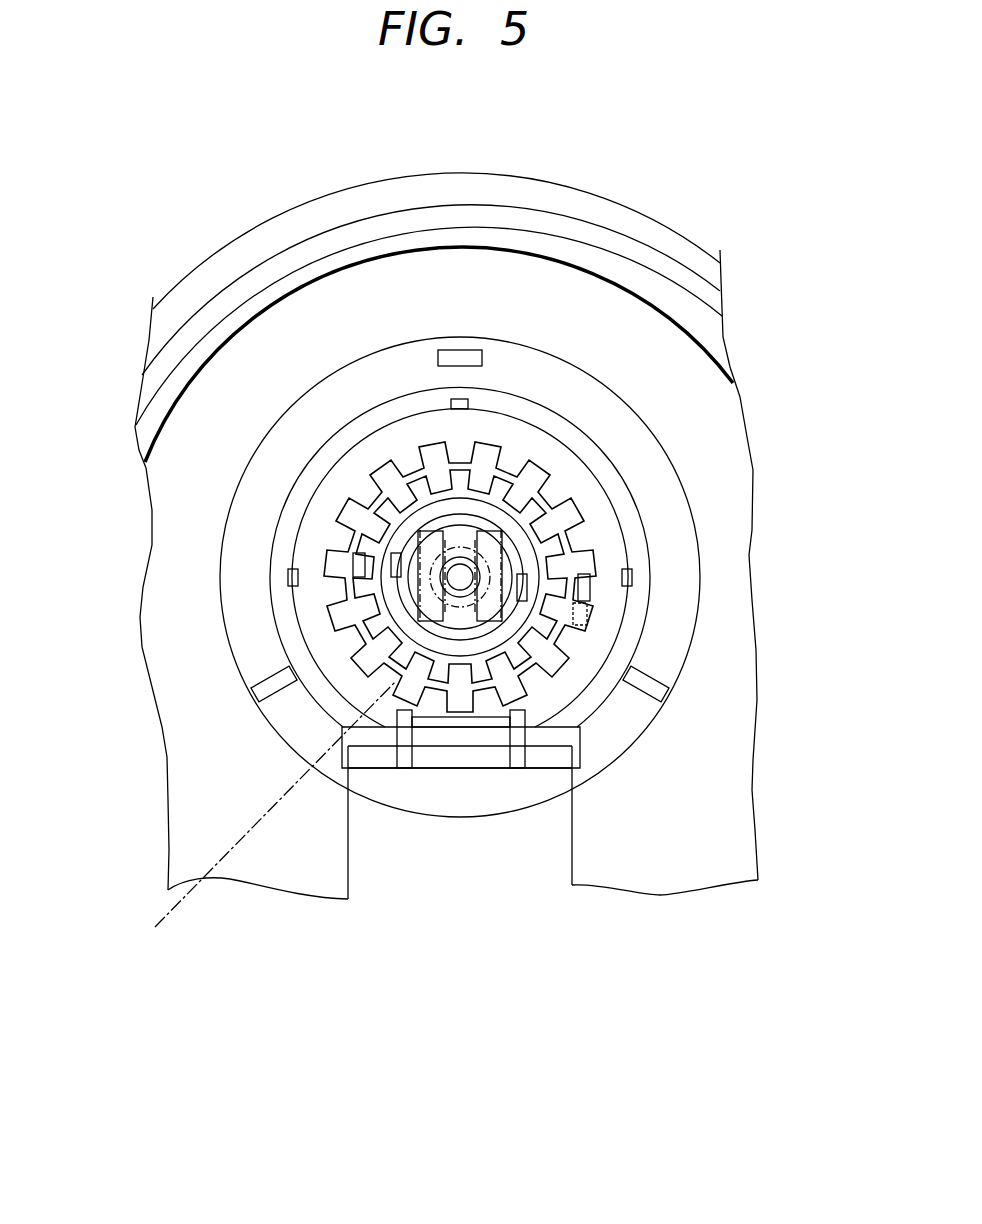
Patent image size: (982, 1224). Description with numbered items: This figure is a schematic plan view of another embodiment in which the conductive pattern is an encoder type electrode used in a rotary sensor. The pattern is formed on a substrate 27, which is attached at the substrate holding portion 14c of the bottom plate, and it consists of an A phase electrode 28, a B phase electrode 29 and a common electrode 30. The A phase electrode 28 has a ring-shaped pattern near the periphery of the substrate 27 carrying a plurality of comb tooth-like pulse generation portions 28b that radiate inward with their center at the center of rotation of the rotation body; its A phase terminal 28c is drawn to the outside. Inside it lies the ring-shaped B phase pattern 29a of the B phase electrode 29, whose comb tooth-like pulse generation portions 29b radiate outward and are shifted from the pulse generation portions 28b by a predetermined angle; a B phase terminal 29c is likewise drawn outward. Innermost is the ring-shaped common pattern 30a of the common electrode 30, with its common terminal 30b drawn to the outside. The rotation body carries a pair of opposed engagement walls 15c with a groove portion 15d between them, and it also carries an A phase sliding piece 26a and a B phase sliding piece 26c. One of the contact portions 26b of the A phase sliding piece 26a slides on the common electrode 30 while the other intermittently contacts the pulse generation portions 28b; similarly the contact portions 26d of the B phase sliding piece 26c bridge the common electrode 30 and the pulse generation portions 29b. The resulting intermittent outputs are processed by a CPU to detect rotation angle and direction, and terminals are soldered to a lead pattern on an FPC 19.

The substrate holding portion 14c is at (372, 418).
The engagement walls 15c is at (428, 532).
The groove portion 15d is at (260, 827).
The FPC 19 is at (487, 877).
The A phase sliding piece 26a is at (578, 655).
The contact portions 26b is at (550, 558).
The B phase sliding piece 26c is at (400, 500).
The contact portions 26d is at (345, 620).
The substrate 27 is at (577, 467).
The A phase electrode 28 is at (591, 497).
The pulse generation portions 28b is at (575, 540).
The A phase terminal 28c is at (398, 735).
The B phase electrode 29 is at (340, 728).
The B phase pattern 29a is at (395, 651).
The pulse generation portions 29b is at (397, 675).
The B phase terminal 29c is at (508, 733).
The common electrode 30 is at (505, 508).
The common pattern 30a is at (520, 505).
The common terminal 30b is at (427, 740).